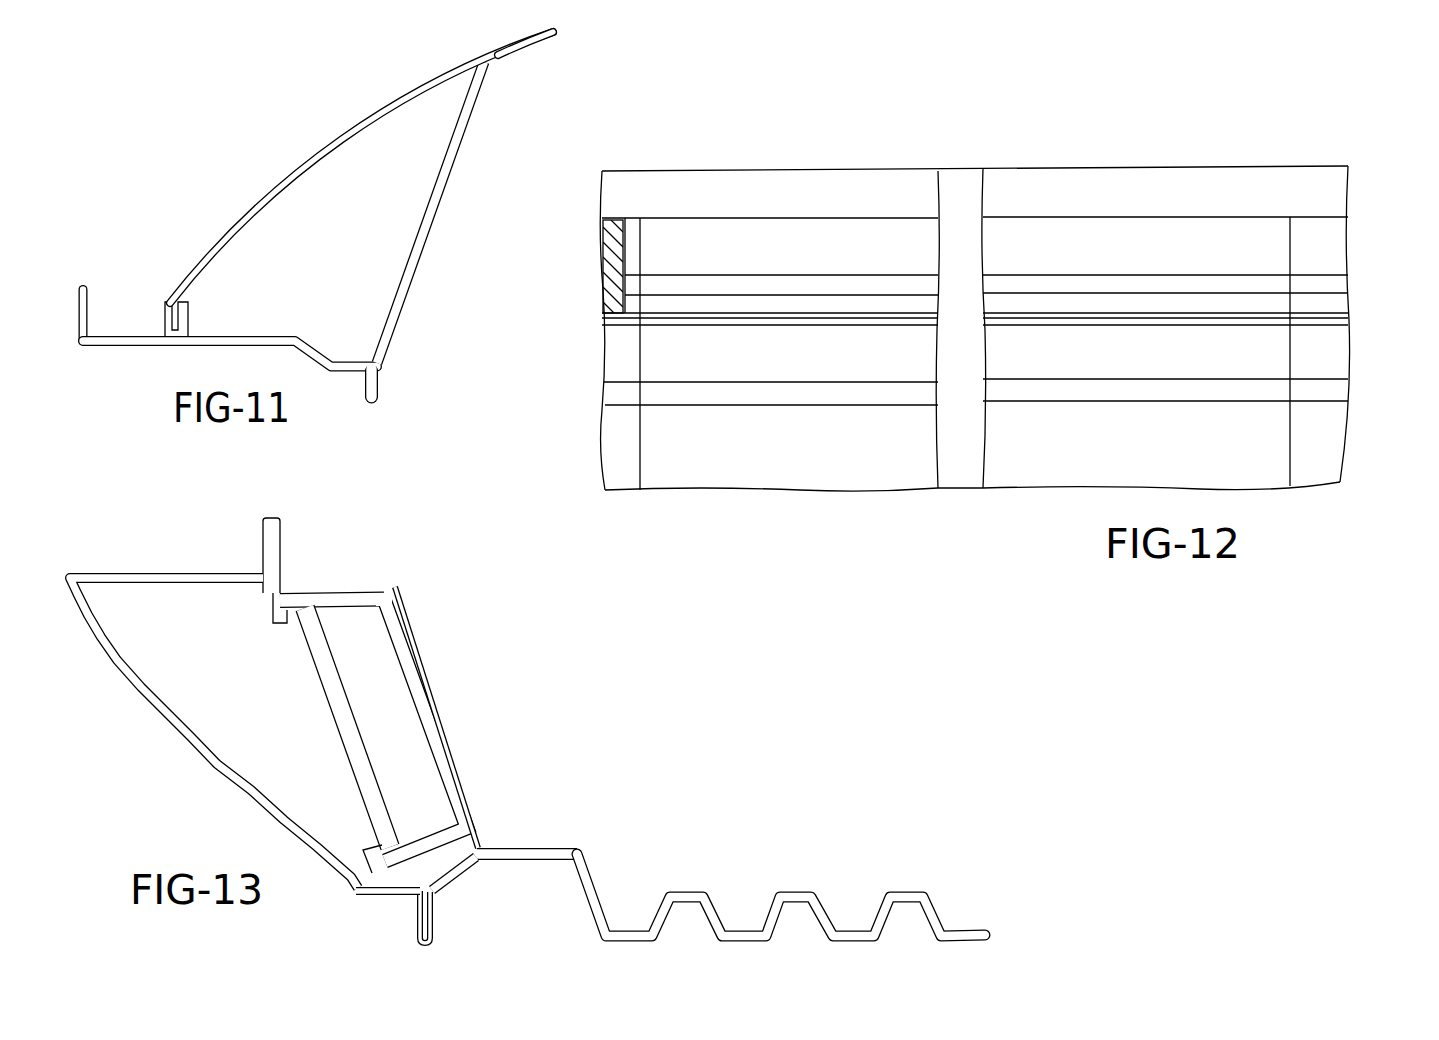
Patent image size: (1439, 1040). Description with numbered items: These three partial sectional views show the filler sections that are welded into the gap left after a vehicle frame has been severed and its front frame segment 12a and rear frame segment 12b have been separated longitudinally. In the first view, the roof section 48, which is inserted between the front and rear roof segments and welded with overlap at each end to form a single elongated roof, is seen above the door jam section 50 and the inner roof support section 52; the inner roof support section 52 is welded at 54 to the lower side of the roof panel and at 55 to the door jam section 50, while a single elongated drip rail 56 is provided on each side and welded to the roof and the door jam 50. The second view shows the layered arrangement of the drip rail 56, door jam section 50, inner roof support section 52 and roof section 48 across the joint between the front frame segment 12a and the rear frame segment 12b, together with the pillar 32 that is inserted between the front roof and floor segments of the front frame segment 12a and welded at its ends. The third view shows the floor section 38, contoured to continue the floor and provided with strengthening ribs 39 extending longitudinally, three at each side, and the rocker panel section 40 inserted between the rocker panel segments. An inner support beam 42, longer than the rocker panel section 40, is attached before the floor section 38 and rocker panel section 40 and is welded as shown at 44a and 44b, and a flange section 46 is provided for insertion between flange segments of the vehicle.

In FIG. 11, the roof section 48 is at (361, 167).
In FIG. 12, the roof section 48 is at (976, 429).
In FIG. 11, the door jam section 50 is at (230, 334).
In FIG. 12, the door jam section 50 is at (986, 354).
In FIG. 11, the inner roof support section 52 is at (430, 212).
In FIG. 12, the inner roof support section 52 is at (975, 347).
In FIG. 11, the weld 54 is at (527, 59).
In FIG. 11, the weld 55 is at (399, 382).
In FIG. 11, the drip rail 56 is at (115, 313).
In FIG. 12, the drip rail 56 is at (975, 192).
In FIG. 12, the pillar 32 is at (586, 267).
In FIG. 12, the front frame segment 12a is at (765, 331).
In FIG. 12, the rear frame segment 12b is at (1198, 328).
In FIG. 13, the floor section 38 is at (486, 738).
In FIG. 13, the strengthening ribs 39 is at (781, 891).
In FIG. 13, the rocker panel section 40 is at (214, 703).
In FIG. 13, the inner support beam 42 is at (355, 740).
In FIG. 13, the weld 44a is at (338, 587).
In FIG. 13, the weld 44b is at (440, 730).
In FIG. 13, the flange section 46 is at (433, 913).